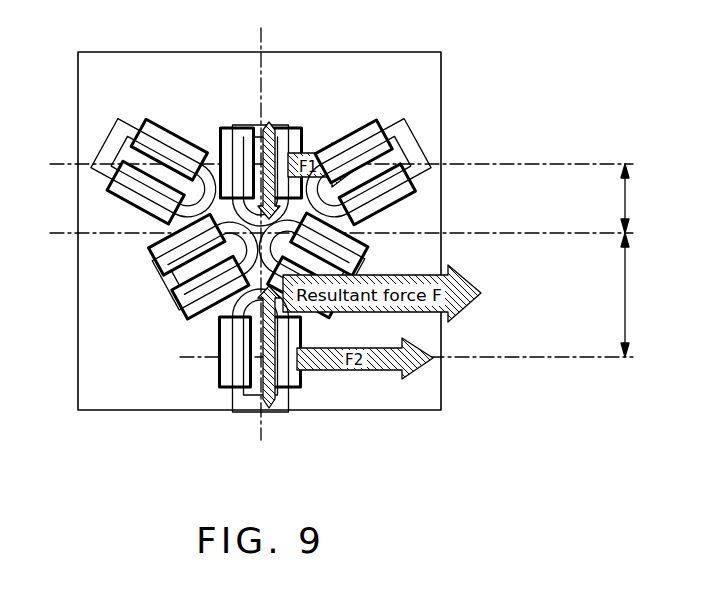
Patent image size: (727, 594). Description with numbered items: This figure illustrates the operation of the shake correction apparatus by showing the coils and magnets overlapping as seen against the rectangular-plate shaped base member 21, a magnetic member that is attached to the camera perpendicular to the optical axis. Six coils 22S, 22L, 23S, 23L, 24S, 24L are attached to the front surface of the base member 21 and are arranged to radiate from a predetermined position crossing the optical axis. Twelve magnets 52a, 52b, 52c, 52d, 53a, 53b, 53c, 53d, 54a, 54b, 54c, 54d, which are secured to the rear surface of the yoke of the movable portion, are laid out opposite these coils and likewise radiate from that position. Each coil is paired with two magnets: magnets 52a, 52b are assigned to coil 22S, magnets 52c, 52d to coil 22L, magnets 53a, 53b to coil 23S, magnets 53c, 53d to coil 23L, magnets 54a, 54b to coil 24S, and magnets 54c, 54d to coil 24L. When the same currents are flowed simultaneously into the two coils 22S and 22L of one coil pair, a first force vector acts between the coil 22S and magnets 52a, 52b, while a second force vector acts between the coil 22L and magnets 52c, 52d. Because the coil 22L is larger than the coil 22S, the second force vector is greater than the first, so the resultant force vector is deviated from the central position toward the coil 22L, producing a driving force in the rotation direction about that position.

The base member 21 is at (443, 393).
The coil 22S is at (257, 123).
The coil 22L is at (279, 408).
The coil 23L is at (98, 150).
The coil 23S is at (378, 268).
The coil 24L is at (408, 128).
The coil 24S is at (160, 289).
The magnet 52a is at (293, 128).
The magnet 52b is at (222, 127).
The magnet 52c is at (301, 383).
The magnet 52d is at (221, 384).
The magnet 53a is at (334, 316).
The magnet 53b is at (370, 246).
The magnet 53c is at (104, 186).
The magnet 53d is at (143, 120).
The magnet 54a is at (152, 256).
The magnet 54b is at (186, 320).
The magnet 54c is at (367, 120).
The magnet 54d is at (412, 183).